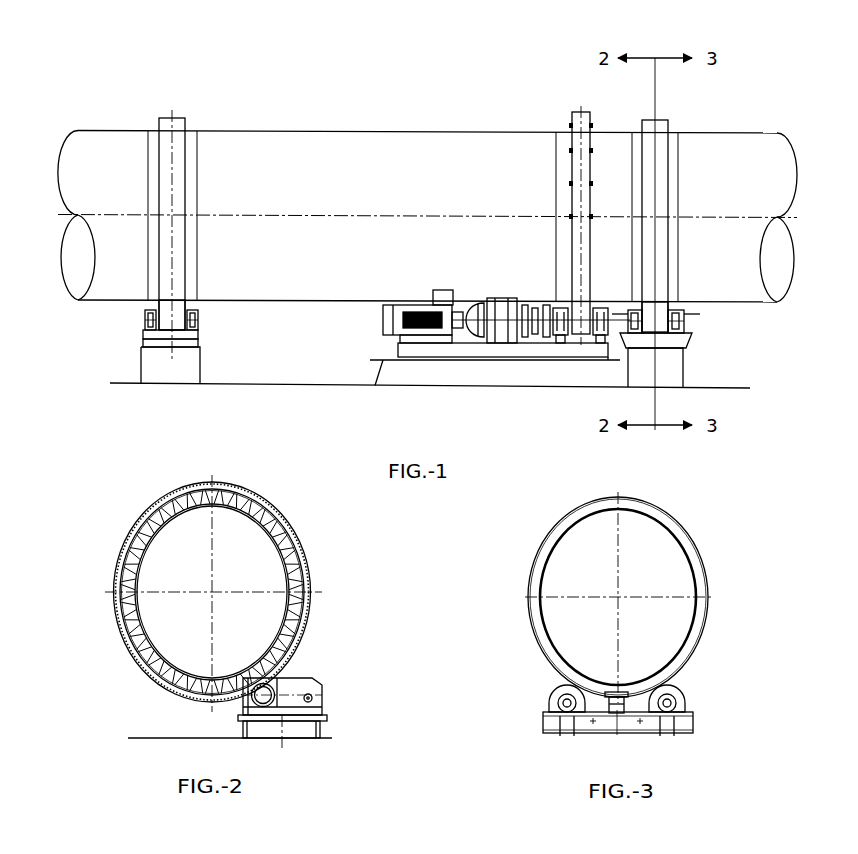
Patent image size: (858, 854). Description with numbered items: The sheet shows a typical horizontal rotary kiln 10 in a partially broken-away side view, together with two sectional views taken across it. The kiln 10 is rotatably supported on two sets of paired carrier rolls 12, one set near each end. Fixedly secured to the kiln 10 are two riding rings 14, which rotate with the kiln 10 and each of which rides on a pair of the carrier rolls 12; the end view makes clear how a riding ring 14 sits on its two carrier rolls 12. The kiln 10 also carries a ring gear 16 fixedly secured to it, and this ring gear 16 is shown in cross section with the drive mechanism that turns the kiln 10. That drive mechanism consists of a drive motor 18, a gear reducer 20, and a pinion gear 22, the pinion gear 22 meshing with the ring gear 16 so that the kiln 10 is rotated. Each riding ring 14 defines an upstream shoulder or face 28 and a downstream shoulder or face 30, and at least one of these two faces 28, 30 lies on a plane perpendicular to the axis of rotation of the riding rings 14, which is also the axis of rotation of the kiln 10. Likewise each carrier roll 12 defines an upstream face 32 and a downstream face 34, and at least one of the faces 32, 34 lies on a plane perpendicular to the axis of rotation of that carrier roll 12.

In FIG. 1, the rotary kiln 10 is at (407, 116).
In FIG. 3, the rotary kiln 10 is at (708, 540).
In FIG. 1, the carrier rolls 12 is at (147, 331).
In FIG. 3, the carrier rolls 12 is at (556, 688).
In FIG. 1, the riding rings 14 is at (168, 125).
In FIG. 3, the riding rings 14 is at (709, 589).
In FIG. 1, the ring gear 16 is at (572, 118).
In FIG. 2, the ring gear 16 is at (290, 531).
In FIG. 1, the drive motor 18 is at (388, 346).
In FIG. 1, the gear reducer 20 is at (495, 348).
In FIG. 1, the pinion gear 22 is at (572, 348).
In FIG. 2, the pinion gear 22 is at (272, 684).
In FIG. 1, the upstream shoulder or face 28 is at (158, 125).
In FIG. 3, the upstream shoulder or face 28 is at (697, 641).
In FIG. 1, the downstream shoulder or face 30 is at (186, 125).
In FIG. 1, the upstream face 32 is at (147, 311).
In FIG. 3, the upstream face 32 is at (558, 699).
In FIG. 1, the downstream face 34 is at (187, 312).